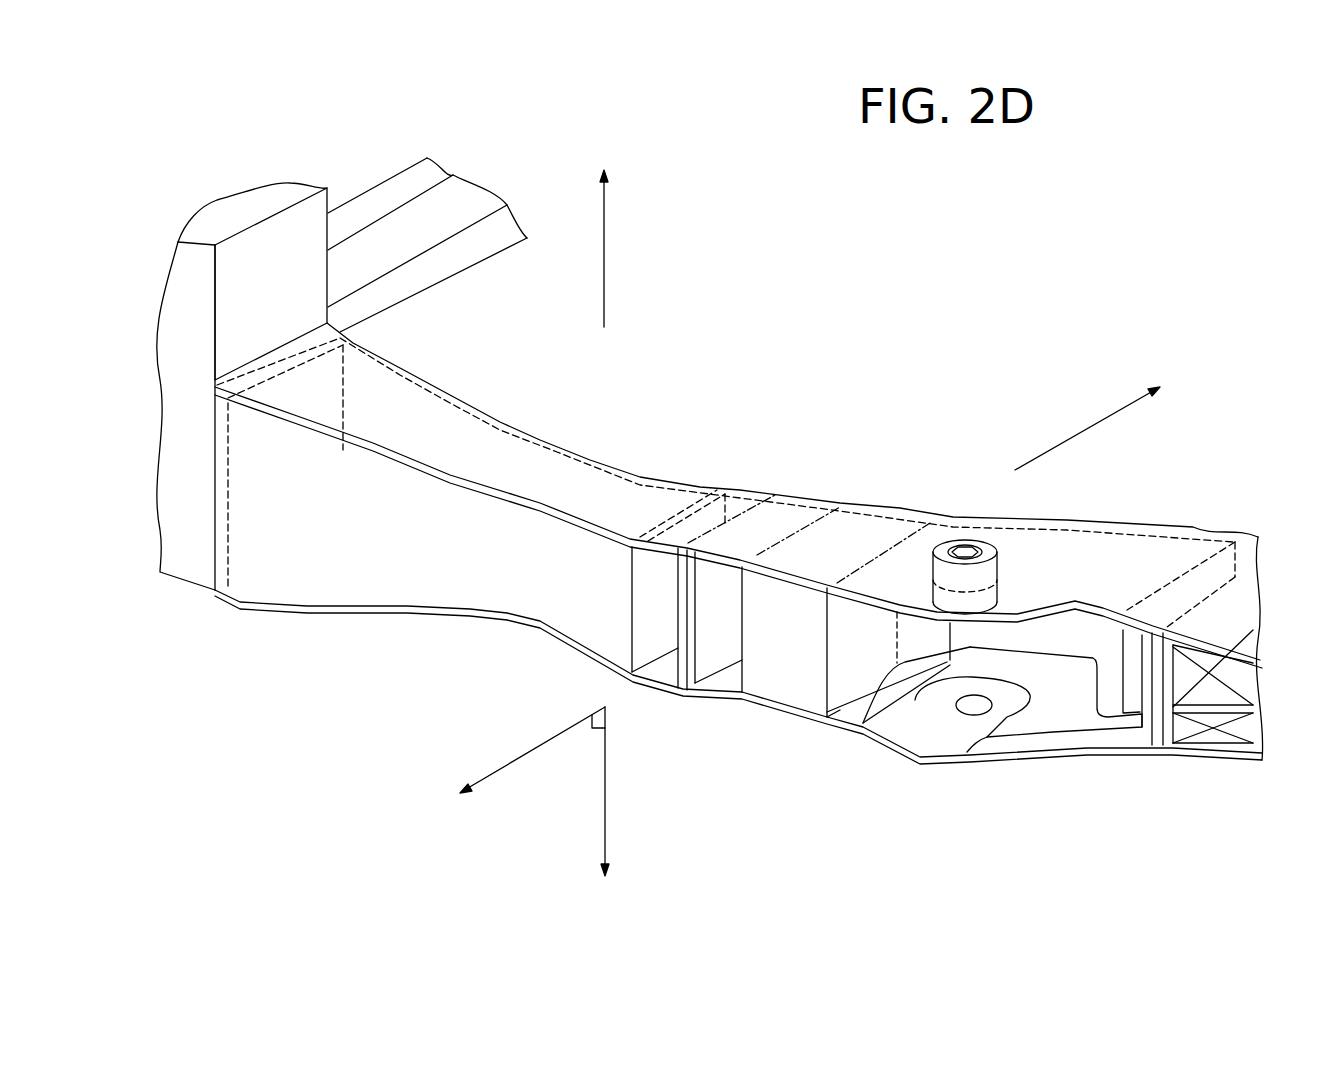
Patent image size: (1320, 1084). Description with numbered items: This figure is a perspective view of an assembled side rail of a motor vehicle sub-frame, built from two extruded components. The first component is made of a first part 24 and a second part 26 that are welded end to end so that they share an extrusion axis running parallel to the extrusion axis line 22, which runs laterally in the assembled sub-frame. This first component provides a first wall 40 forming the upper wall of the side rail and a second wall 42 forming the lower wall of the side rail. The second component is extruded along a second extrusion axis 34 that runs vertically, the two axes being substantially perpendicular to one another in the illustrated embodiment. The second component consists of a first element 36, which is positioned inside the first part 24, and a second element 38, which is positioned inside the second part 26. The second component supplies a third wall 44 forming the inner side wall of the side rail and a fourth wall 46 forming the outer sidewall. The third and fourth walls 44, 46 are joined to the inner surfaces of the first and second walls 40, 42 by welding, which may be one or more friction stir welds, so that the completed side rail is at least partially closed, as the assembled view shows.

The extrusion axis line 22 is at (1085, 428).
The first part 24 is at (447, 435).
The second part 26 is at (1102, 540).
The second extrusion axis 34 is at (604, 257).
The first element 36 is at (592, 605).
The second element 38 is at (860, 667).
The first wall 40 is at (647, 503).
The second wall 42 is at (730, 697).
The third wall 44 is at (590, 463).
The fourth wall 46 is at (385, 532).